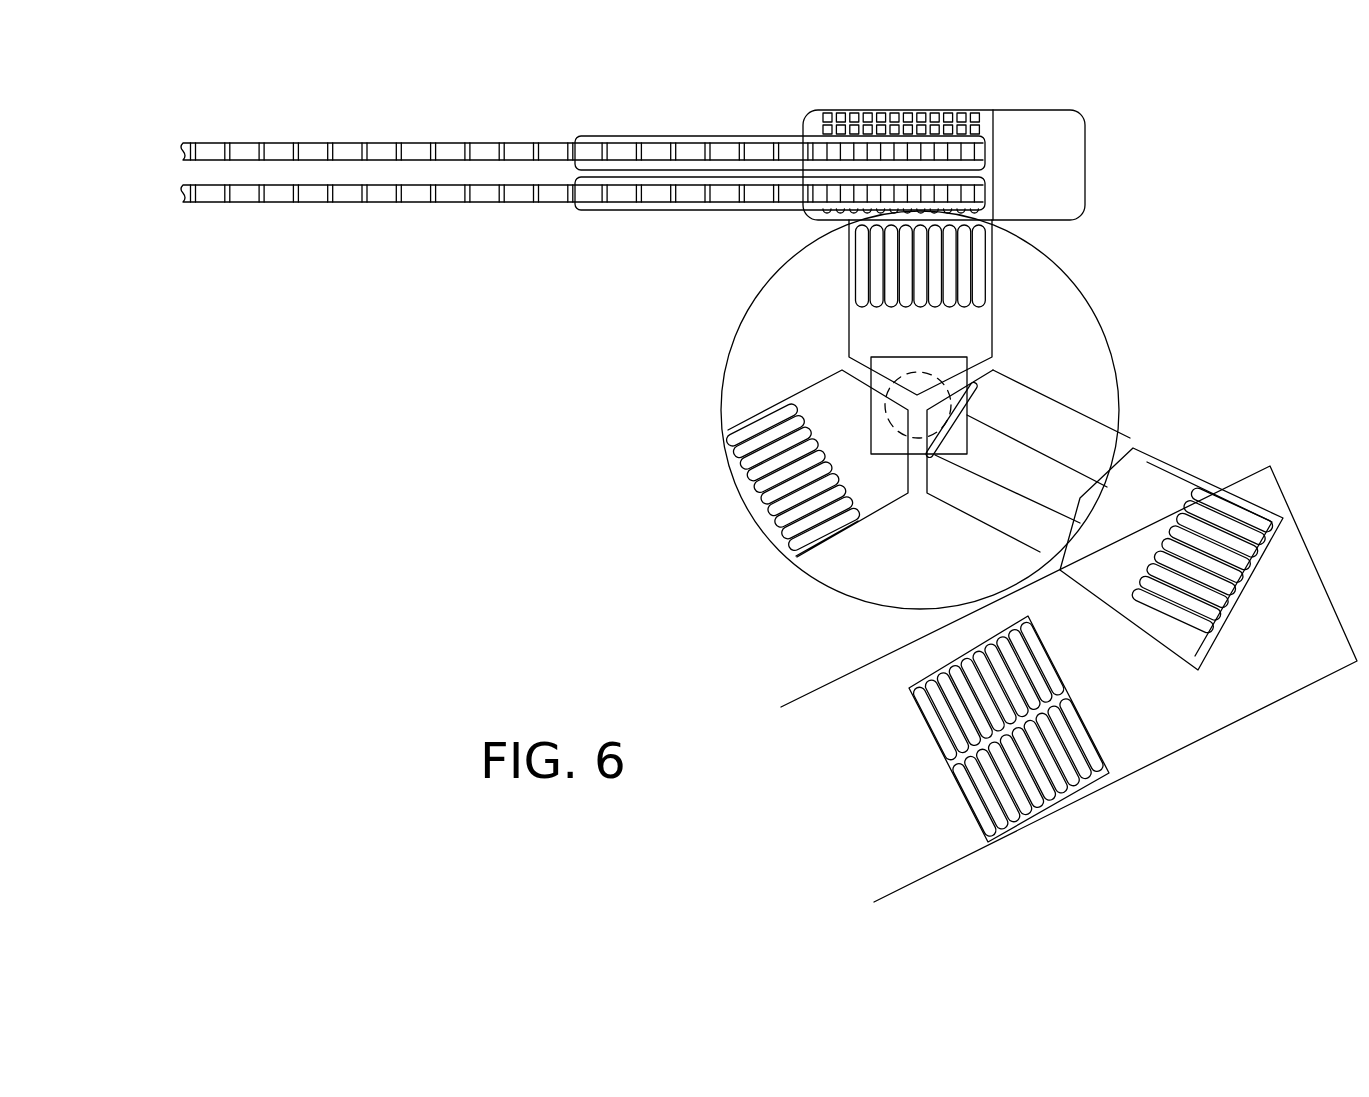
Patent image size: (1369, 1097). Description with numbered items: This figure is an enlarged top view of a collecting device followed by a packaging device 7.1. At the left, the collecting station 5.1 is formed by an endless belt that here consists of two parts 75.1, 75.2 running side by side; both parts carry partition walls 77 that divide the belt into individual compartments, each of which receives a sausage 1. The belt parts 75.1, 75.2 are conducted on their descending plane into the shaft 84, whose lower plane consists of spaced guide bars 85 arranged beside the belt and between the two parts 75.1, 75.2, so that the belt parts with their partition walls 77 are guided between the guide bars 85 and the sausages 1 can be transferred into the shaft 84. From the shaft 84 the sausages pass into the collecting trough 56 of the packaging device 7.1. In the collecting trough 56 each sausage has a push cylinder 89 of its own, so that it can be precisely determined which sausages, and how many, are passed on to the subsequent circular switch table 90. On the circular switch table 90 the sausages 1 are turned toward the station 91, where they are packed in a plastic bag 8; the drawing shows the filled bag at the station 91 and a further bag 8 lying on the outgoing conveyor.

The sausages 1 is at (797, 550).
The collecting station 5.1 is at (582, 181).
The packaging device 7.1 is at (1180, 221).
The plastic bag 8 is at (1181, 618).
The collecting trough 56 is at (905, 107).
The first part of the endless belt 75.1 is at (303, 141).
The second part of the endless belt 75.2 is at (336, 207).
The partition walls 77 is at (433, 143).
The shaft 84 is at (672, 133).
The guide bars 85 is at (680, 143).
The push cylinder 89 is at (965, 198).
The circular switch table 90 is at (1112, 343).
The station 91 is at (1187, 447).